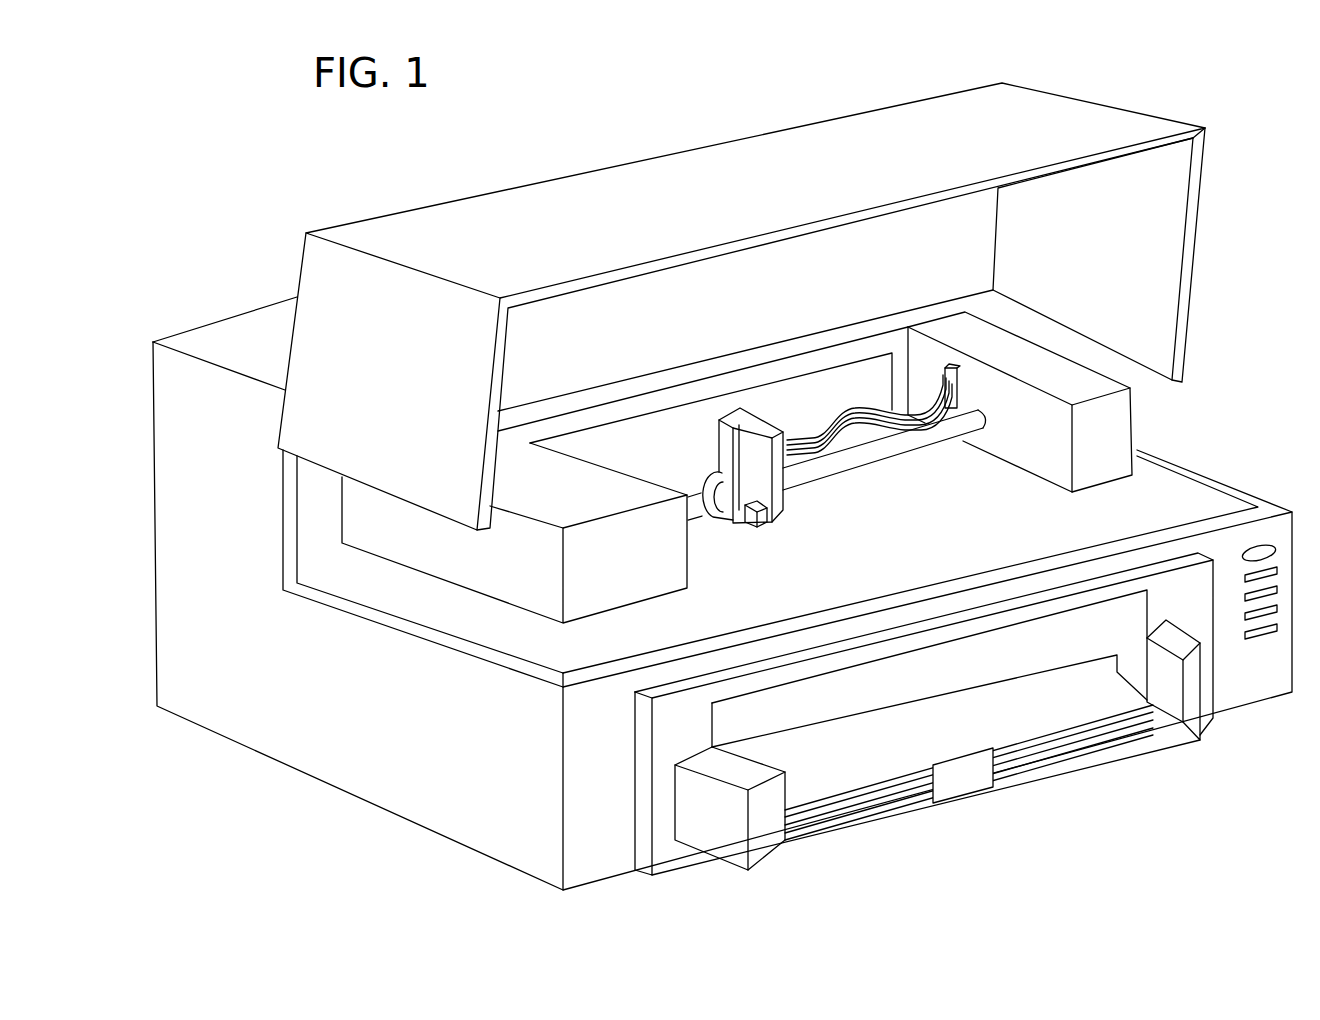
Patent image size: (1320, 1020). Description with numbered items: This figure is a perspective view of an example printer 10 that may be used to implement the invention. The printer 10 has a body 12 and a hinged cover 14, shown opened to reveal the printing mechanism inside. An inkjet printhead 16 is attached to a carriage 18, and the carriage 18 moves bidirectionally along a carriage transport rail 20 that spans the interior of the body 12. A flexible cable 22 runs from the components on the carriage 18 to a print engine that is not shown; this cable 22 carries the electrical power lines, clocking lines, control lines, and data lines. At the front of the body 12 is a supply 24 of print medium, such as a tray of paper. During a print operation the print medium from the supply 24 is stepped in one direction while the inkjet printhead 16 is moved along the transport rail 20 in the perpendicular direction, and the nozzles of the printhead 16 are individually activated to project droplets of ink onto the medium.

The printer 10 is at (343, 820).
The body 12 is at (167, 433).
The hinged cover 14 is at (316, 276).
The inkjet printhead 16 is at (785, 513).
The carriage 18 is at (727, 453).
The carriage transport rail 20 is at (877, 453).
The flexible cable 22 is at (867, 410).
The supply 24 is at (873, 767).